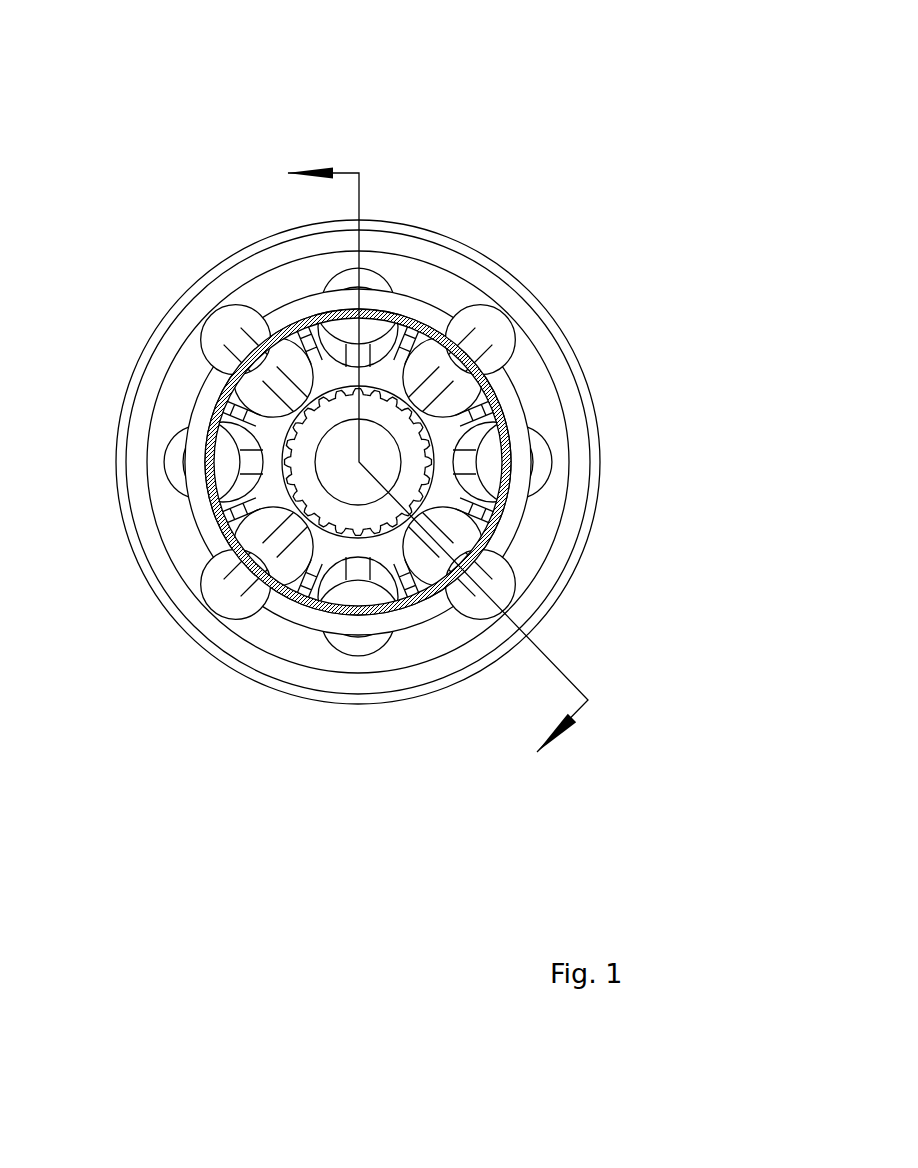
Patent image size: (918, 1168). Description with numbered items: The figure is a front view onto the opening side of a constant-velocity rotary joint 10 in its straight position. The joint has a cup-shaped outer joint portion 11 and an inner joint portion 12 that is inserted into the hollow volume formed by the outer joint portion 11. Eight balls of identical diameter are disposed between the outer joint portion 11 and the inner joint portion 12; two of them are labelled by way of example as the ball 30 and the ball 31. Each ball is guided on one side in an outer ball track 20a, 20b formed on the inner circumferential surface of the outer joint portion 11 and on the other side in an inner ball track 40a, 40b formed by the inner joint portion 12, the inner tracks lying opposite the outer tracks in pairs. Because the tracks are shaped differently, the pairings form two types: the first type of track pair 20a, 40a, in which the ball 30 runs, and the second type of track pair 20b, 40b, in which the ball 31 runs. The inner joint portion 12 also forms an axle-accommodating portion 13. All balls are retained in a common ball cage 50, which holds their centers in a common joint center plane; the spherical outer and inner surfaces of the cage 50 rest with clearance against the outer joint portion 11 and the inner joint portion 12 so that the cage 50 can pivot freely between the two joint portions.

The constant-velocity rotary joint 10 is at (182, 145).
The outer joint portion 11 is at (548, 386).
The inner joint portion 12 is at (205, 473).
The axle-accommodating portion 13 is at (213, 523).
The outer ball track 20a is at (333, 273).
The outer ball track 20b is at (467, 617).
The ball 30 is at (373, 277).
The ball 31 is at (494, 580).
The inner ball track 40a is at (340, 393).
The inner ball track 40b is at (402, 552).
The ball cage 50 is at (203, 400).